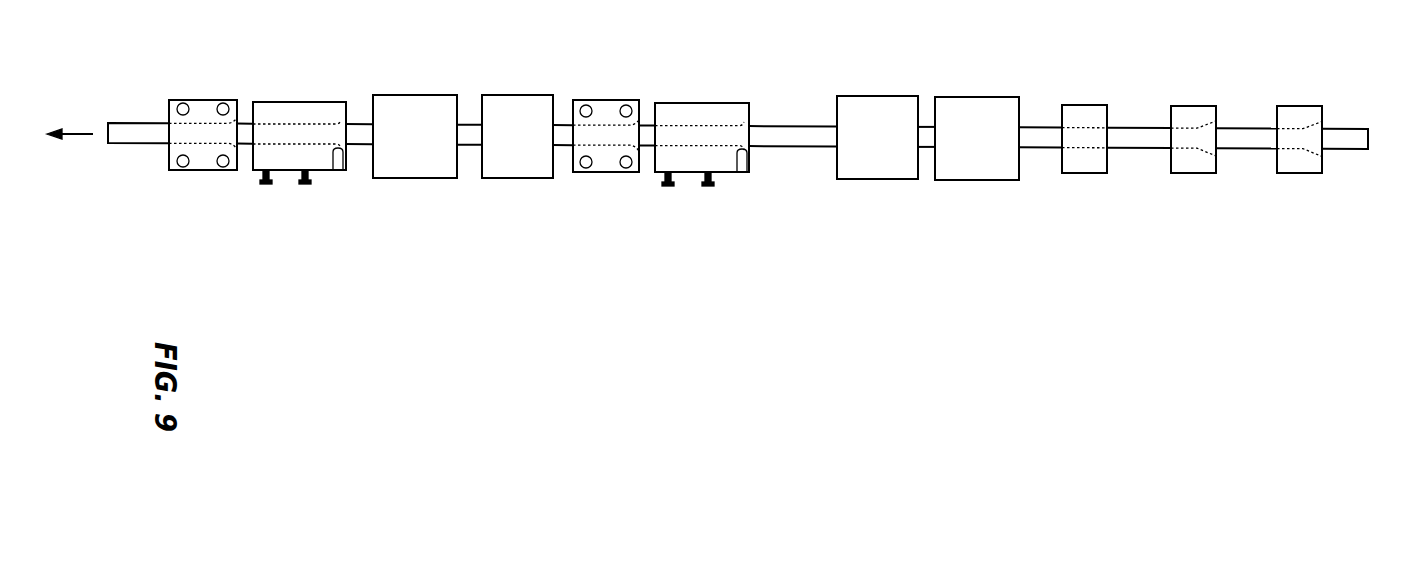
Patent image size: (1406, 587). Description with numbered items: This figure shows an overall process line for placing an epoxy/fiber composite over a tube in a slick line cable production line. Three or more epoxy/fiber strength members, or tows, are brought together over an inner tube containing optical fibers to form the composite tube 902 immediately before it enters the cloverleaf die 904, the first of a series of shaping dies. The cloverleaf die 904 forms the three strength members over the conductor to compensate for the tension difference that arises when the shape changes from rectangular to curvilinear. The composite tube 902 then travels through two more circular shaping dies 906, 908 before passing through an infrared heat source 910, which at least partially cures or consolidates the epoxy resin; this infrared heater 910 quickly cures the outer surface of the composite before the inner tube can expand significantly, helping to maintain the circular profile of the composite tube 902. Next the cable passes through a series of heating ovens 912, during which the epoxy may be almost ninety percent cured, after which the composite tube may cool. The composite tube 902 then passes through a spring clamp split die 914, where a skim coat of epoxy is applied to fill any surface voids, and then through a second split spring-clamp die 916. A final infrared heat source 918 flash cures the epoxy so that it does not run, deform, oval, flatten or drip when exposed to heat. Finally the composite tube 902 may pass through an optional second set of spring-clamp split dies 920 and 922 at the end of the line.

The composite tube 902 is at (1348, 149).
The cloverleaf die 904 is at (1300, 173).
The circular shaping die 906 is at (1193, 173).
The circular shaping die 908 is at (1083, 173).
The infrared heat source 910 is at (980, 180).
The heating ovens 912 is at (878, 179).
The spring clamp split die 914 is at (693, 172).
The second split spring-clamp die 916 is at (608, 172).
The final infrared heat source 918 is at (415, 178).
The spring-clamp split die 920 is at (292, 170).
The spring-clamp split die 922 is at (203, 170).